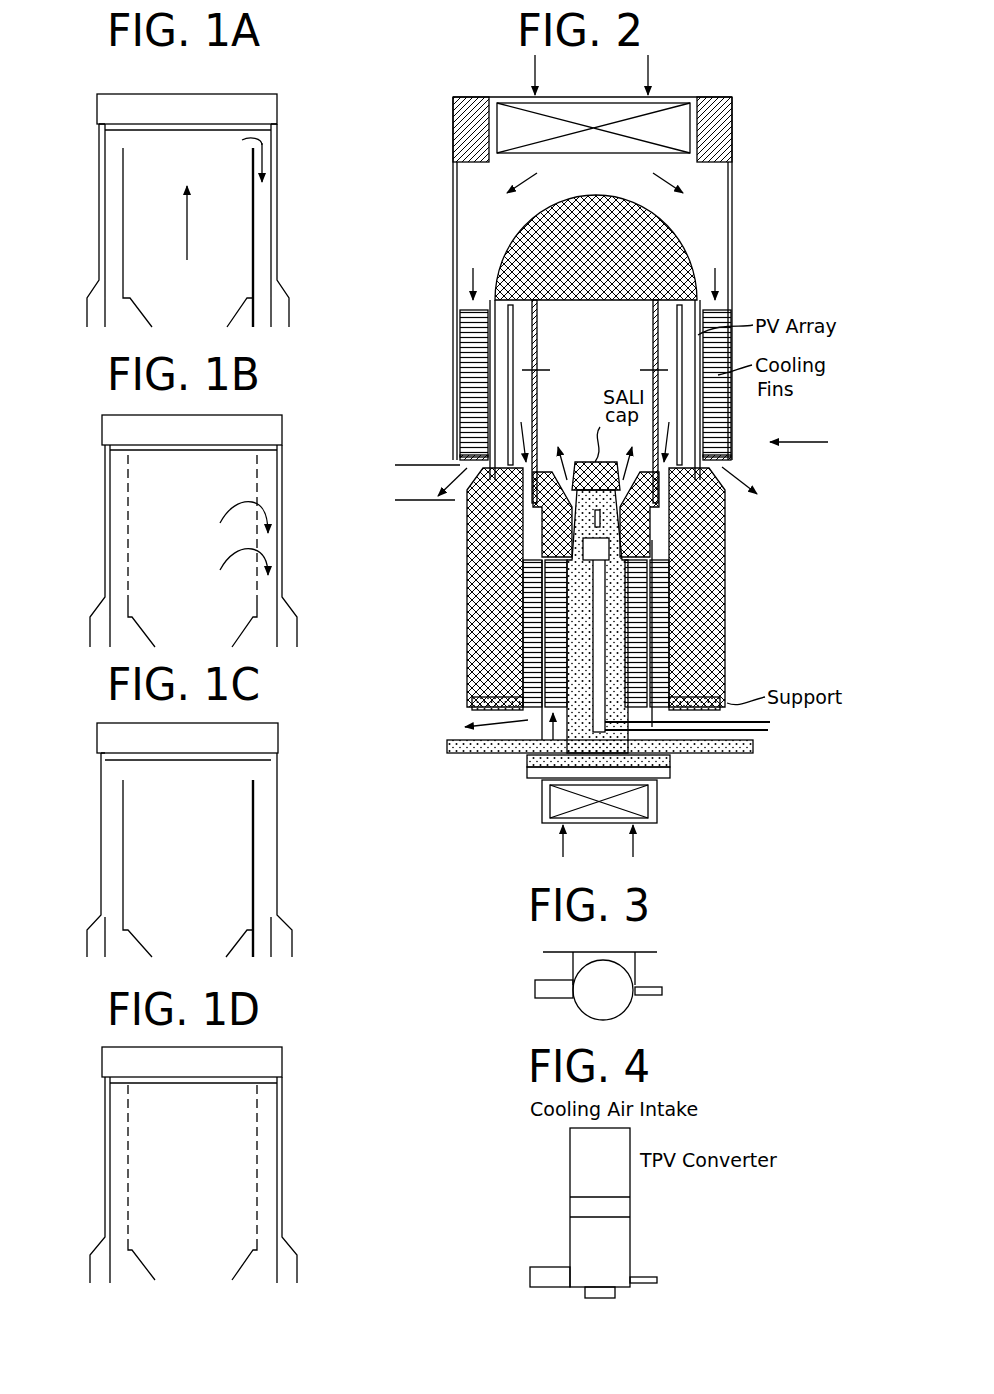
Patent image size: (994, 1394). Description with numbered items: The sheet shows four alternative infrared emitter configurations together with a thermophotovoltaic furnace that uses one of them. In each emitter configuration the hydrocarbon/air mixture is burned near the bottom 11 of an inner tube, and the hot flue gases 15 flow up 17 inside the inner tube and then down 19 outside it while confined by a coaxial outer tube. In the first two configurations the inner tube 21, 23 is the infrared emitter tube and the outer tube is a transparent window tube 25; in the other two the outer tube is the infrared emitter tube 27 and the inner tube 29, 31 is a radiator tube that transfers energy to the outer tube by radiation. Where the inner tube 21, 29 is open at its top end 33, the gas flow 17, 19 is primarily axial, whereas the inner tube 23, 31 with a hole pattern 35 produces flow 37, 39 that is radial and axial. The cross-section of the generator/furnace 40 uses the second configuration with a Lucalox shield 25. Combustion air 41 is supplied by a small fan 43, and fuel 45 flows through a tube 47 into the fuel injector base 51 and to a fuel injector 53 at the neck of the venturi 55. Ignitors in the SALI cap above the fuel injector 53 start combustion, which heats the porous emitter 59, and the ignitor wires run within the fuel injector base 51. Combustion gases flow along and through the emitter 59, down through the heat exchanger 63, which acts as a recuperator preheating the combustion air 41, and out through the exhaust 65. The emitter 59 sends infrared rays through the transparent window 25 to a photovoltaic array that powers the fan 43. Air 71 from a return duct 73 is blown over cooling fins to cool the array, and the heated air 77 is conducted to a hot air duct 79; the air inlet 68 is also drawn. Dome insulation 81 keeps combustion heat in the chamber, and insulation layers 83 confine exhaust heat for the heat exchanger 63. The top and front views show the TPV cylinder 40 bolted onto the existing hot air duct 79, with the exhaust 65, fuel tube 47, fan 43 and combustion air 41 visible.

In FIG. 1A, the bottom of inner tube 11 is at (172, 296).
In FIG. 1A, the hot flue gases 15 is at (223, 207).
In FIG. 2, the hot flue gases 15 is at (652, 360).
In FIG. 1A, the upward gas flow 17 is at (190, 245).
In FIG. 1A, the downward gas flow 19 is at (273, 140).
In FIG. 1A, the inner tube 21 is at (250, 276).
In FIG. 1B, the inner tube 23 is at (130, 553).
In FIG. 1A, the transparent window tube 25 is at (276, 238).
In FIG. 1B, the transparent window tube 25 is at (105, 530).
In FIG. 2, the transparent window tube 25 is at (683, 317).
In FIG. 1C, the infrared emitter tube 27 is at (278, 813).
In FIG. 1D, the infrared emitter tube 27 is at (283, 1157).
In FIG. 1C, the inner tube 29 is at (252, 873).
In FIG. 1D, the inner tube 31 is at (130, 1237).
In FIG. 1A, the top end 33 is at (250, 148).
In FIG. 1C, the top end 33 is at (250, 780).
In FIG. 1B, the hole pattern 35 is at (255, 485).
In FIG. 1D, the hole pattern 35 is at (130, 1130).
In FIG. 1B, the radial and axial flow 37 is at (230, 500).
In FIG. 1B, the radial and axial flow 39 is at (275, 505).
In FIG. 2, the generator/furnace 40 is at (814, 443).
In FIG. 4, the generator/furnace 40 is at (650, 1234).
In FIG. 2, the combustion air 41 is at (633, 845).
In FIG. 4, the combustion air 41 is at (600, 1300).
In FIG. 2, the fan 43 is at (657, 790).
In FIG. 4, the fan 43 is at (615, 1290).
In FIG. 2, the fuel 45 is at (770, 722).
In FIG. 2, the tube 47 is at (755, 732).
In FIG. 3, the tube 47 is at (647, 985).
In FIG. 4, the tube 47 is at (657, 1272).
In FIG. 2, the fuel injector base 51 is at (632, 597).
In FIG. 2, the fuel injector 53 is at (640, 525).
In FIG. 2, the venturi 55 is at (628, 492).
In FIG. 2, the porous emitter 59 is at (660, 295).
In FIG. 2, the heat exchanger 63 is at (640, 628).
In FIG. 2, the exhaust 65 is at (530, 715).
In FIG. 3, the exhaust 65 is at (553, 998).
In FIG. 4, the exhaust 65 is at (550, 1267).
In FIG. 2, the air inlet 68 is at (670, 103).
In FIG. 2, the air 71 is at (533, 67).
In FIG. 2, the return duct 73 is at (510, 97).
In FIG. 2, the heated air 77 is at (760, 480).
In FIG. 2, the hot air duct 79 is at (418, 500).
In FIG. 3, the hot air duct 79 is at (645, 950).
In FIG. 4, the hot air duct 79 is at (632, 1205).
In FIG. 2, the dome insulation 81 is at (686, 257).
In FIG. 2, the insulation layers 83 is at (710, 580).